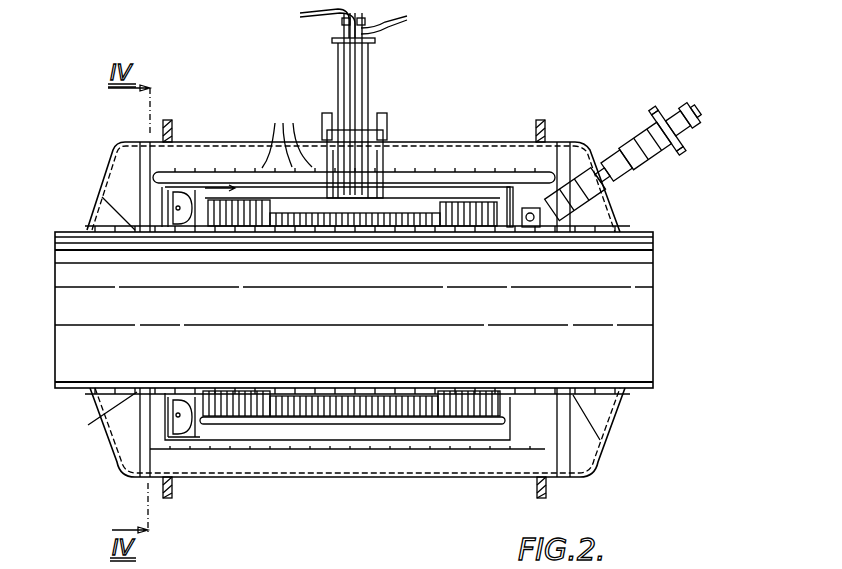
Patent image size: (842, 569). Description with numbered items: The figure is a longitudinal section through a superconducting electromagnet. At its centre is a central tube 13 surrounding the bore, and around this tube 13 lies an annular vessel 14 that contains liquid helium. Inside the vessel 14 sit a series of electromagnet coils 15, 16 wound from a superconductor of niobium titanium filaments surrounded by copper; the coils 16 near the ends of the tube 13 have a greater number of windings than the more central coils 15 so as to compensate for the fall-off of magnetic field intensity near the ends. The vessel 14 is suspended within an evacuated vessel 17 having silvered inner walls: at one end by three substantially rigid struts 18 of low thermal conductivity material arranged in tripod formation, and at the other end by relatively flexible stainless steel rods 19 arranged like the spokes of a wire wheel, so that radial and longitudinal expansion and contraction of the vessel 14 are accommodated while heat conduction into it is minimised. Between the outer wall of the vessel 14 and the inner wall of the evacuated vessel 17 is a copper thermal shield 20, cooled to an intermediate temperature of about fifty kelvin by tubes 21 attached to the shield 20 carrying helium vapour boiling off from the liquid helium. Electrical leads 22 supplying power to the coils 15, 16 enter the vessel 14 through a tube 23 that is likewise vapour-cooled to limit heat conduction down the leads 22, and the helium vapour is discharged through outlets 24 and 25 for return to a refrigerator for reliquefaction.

The central tube 13 is at (635, 236).
The annular vessel 14 is at (425, 440).
The electromagnet coils 15 is at (338, 404).
The electromagnet coils 16 is at (222, 412).
The evacuated vessel 17 is at (537, 430).
The struts 18 is at (690, 131).
The stainless steel rods 19 is at (172, 417).
The thermal shield 20 is at (262, 170).
The tubes 21 is at (287, 131).
The electrical leads 22 is at (311, 21).
The tube 23 is at (368, 63).
The outlet 24 is at (402, 22).
The outlet 25 is at (332, 113).